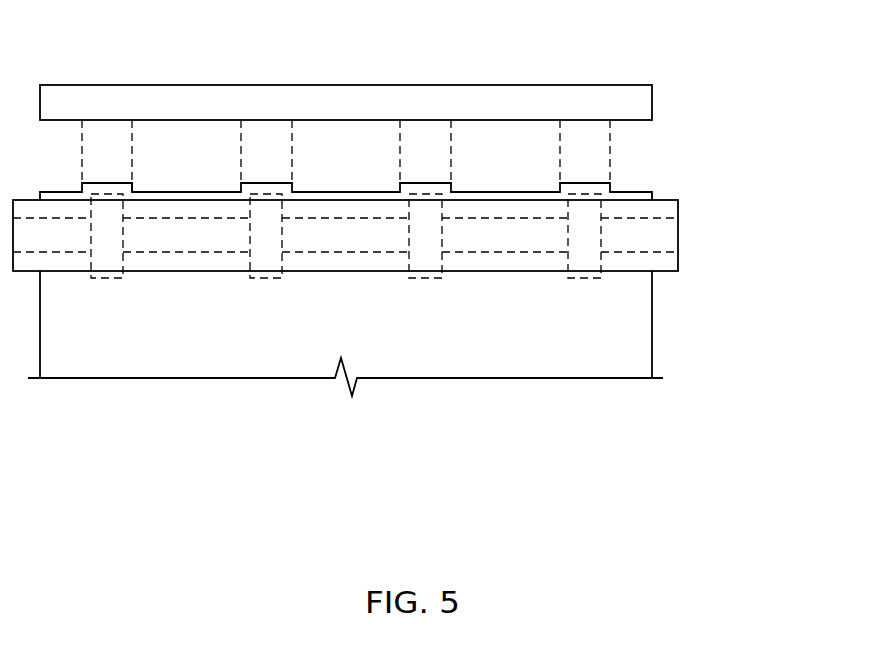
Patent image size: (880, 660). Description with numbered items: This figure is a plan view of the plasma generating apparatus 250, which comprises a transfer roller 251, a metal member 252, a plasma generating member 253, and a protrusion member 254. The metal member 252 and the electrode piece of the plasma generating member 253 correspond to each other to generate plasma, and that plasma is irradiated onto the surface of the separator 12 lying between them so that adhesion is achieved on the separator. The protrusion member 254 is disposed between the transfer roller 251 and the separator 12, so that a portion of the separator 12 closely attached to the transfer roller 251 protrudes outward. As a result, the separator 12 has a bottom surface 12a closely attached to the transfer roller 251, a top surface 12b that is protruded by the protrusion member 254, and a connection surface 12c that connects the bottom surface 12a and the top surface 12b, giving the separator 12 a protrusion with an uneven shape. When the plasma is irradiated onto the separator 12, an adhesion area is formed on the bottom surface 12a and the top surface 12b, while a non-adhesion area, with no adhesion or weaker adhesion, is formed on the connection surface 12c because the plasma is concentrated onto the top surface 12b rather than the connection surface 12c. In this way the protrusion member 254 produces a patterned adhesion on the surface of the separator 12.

The separator 12 is at (170, 378).
The bottom surface 12a is at (187, 191).
The top surface 12b is at (117, 183).
The connection surface 12c is at (134, 184).
The plasma generating apparatus 250 is at (416, 146).
The transfer roller 251 is at (678, 208).
The metal member 252 is at (657, 216).
The plasma generating member 253 is at (398, 98).
The protrusion member 254 is at (601, 210).